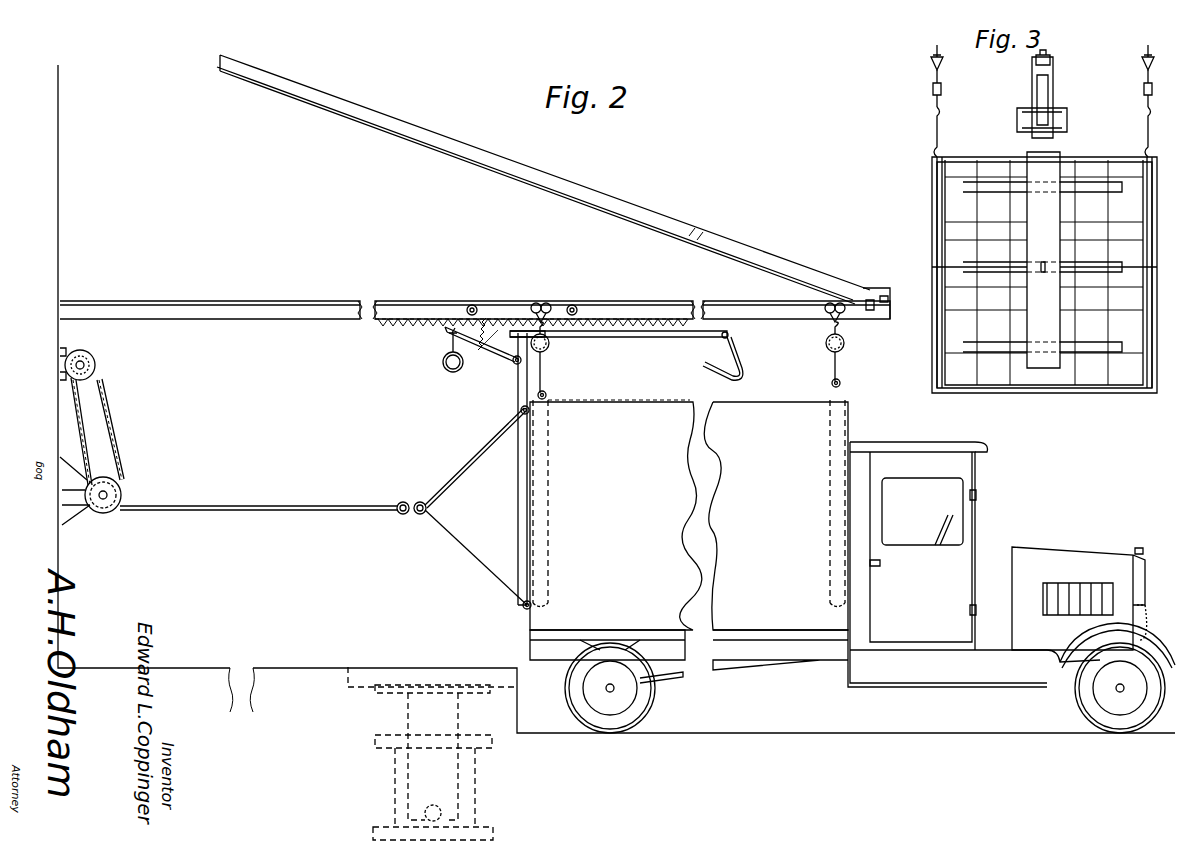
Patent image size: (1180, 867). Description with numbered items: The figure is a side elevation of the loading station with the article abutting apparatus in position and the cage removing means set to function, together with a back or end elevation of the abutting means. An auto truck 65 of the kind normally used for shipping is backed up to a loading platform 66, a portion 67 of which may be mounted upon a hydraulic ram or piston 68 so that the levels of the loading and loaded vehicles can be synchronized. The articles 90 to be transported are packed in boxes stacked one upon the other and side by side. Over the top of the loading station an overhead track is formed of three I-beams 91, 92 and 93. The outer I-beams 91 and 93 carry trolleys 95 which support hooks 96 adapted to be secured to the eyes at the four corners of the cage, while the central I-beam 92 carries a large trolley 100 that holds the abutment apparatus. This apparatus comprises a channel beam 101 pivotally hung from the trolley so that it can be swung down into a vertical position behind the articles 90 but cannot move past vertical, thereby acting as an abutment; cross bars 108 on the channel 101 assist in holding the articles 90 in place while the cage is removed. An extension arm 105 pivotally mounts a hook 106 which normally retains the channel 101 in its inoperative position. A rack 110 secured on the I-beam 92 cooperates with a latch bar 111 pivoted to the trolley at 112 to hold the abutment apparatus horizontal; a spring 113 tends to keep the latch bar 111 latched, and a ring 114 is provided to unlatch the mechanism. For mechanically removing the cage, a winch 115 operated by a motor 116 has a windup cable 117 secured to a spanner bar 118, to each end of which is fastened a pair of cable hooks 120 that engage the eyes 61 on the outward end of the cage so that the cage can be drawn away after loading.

In FIG. 2, the eyes 61 is at (520, 415).
In FIG. 2, the auto truck 65 is at (900, 668).
In FIG. 2, the loading platform 66 is at (280, 690).
In FIG. 2, the portion of the loading platform 67 is at (388, 678).
In FIG. 2, the hydraulic ram 68 is at (420, 718).
In FIG. 3, the articles 90 is at (975, 210).
In FIG. 3, the I-beam 91 is at (935, 55).
In FIG. 3, the central I-beam 92 is at (1050, 58).
In FIG. 2, the I-beam 93 is at (603, 302).
In FIG. 3, the I-beam 93 is at (1148, 55).
In FIG. 2, the trolleys 95 is at (552, 343).
In FIG. 3, the trolleys 95 is at (935, 75).
In FIG. 2, the hooks 96 is at (548, 395).
In FIG. 3, the hooks 96 is at (935, 145).
In FIG. 3, the large trolley 100 is at (1053, 68).
In FIG. 3, the channel beam 101 is at (1045, 165).
In FIG. 2, the extension arm 105 is at (663, 337).
In FIG. 2, the hook 106 is at (740, 372).
In FIG. 3, the cross bars 108 is at (1113, 262).
In FIG. 2, the rack 110 is at (400, 327).
In FIG. 2, the latch bar 111 is at (505, 352).
In FIG. 2, the pivot 112 is at (522, 408).
In FIG. 2, the spring 113 is at (478, 348).
In FIG. 2, the ring 114 is at (440, 368).
In FIG. 2, the winch 115 is at (128, 494).
In FIG. 2, the motor 116 is at (100, 364).
In FIG. 2, the windup cable 117 is at (207, 508).
In FIG. 2, the spanner bar 118 is at (418, 518).
In FIG. 2, the cable hooks 120 is at (452, 486).